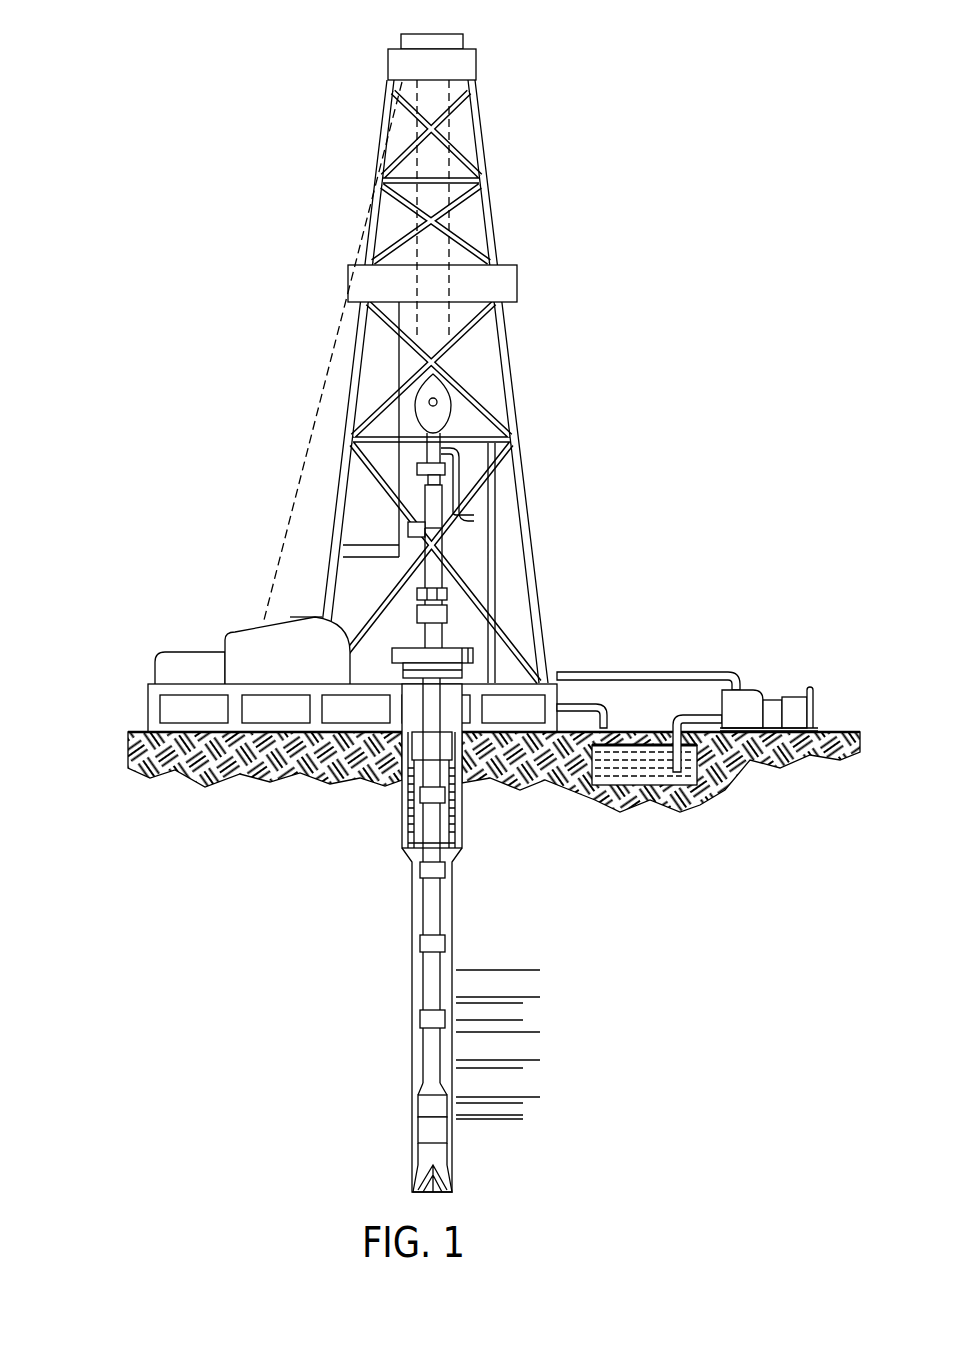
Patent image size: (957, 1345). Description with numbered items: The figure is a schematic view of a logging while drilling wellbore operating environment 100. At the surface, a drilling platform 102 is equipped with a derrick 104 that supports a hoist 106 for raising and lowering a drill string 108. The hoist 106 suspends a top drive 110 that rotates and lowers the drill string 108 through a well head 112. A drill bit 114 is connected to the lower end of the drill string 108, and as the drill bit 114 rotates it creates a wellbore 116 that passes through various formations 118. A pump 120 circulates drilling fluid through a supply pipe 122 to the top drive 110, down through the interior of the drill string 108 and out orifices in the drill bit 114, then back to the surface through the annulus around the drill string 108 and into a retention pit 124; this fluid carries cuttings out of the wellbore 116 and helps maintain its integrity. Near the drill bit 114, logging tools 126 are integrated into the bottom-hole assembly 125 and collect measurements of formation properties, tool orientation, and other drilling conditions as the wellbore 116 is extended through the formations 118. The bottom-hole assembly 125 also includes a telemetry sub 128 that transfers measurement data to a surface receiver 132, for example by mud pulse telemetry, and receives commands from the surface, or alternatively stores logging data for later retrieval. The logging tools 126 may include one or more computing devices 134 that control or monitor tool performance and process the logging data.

The logging while drilling wellbore operating environment 100 is at (306, 84).
The drilling platform 102 is at (148, 703).
The derrick 104 is at (497, 216).
The hoist 106 is at (452, 402).
The drill string 108 is at (440, 908).
The top drive 110 is at (438, 487).
The well head 112 is at (452, 648).
The drill bit 114 is at (455, 1180).
The wellbore 116 is at (453, 933).
The formations 118 is at (543, 967).
The pump 120 is at (752, 697).
The supply pipe 122 is at (639, 672).
The retention pit 124 is at (637, 775).
The bottom-hole assembly 125 is at (348, 1075).
The logging tools 126 is at (425, 1132).
The telemetry sub 128 is at (425, 1103).
The surface receiver 132 is at (448, 592).
The computing devices 134 is at (425, 1138).